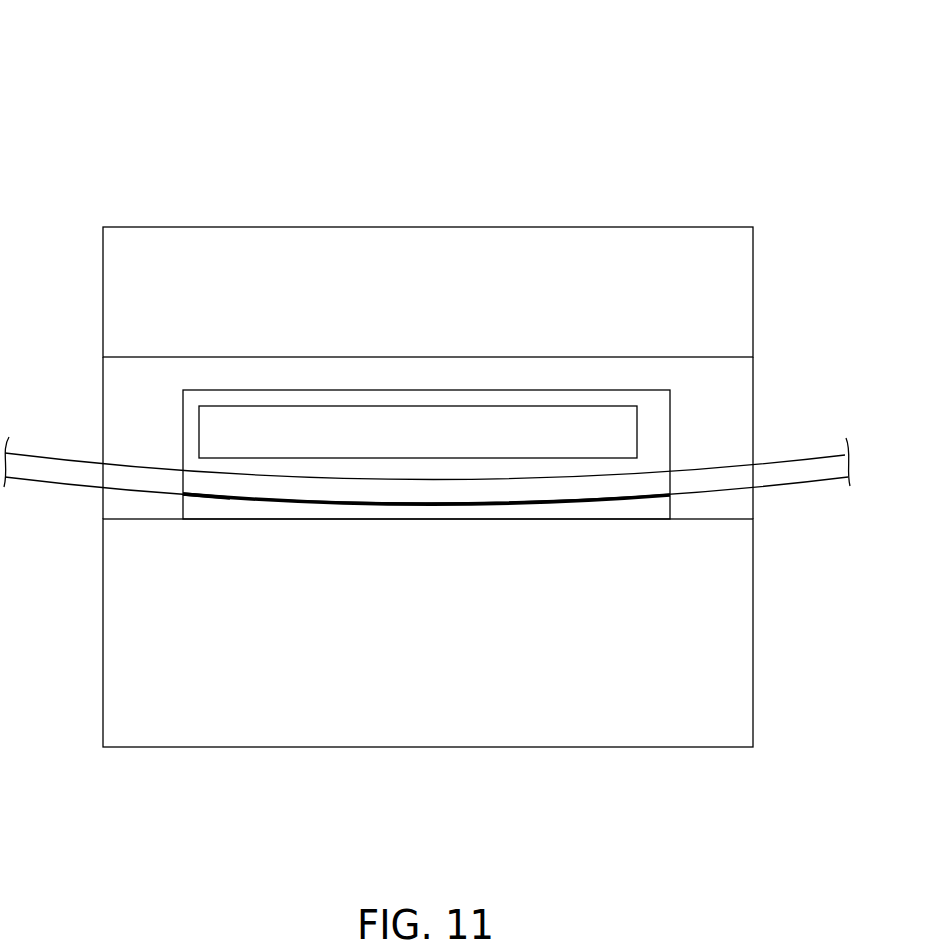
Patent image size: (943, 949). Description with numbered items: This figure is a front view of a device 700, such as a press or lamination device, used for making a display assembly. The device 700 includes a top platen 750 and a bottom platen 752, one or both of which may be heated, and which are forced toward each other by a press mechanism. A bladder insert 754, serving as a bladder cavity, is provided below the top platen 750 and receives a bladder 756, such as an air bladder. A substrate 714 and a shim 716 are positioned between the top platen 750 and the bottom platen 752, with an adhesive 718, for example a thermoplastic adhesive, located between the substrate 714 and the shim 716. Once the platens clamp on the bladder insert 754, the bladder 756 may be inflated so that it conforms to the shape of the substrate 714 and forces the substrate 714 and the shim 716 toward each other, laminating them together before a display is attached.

The device 700 is at (166, 86).
The substrate 714 is at (783, 471).
The shim 716 is at (630, 507).
The adhesive 718 is at (224, 498).
The top platen 750 is at (719, 261).
The bottom platen 752 is at (167, 585).
The bladder insert 754 is at (718, 389).
The bladder 756 is at (240, 430).